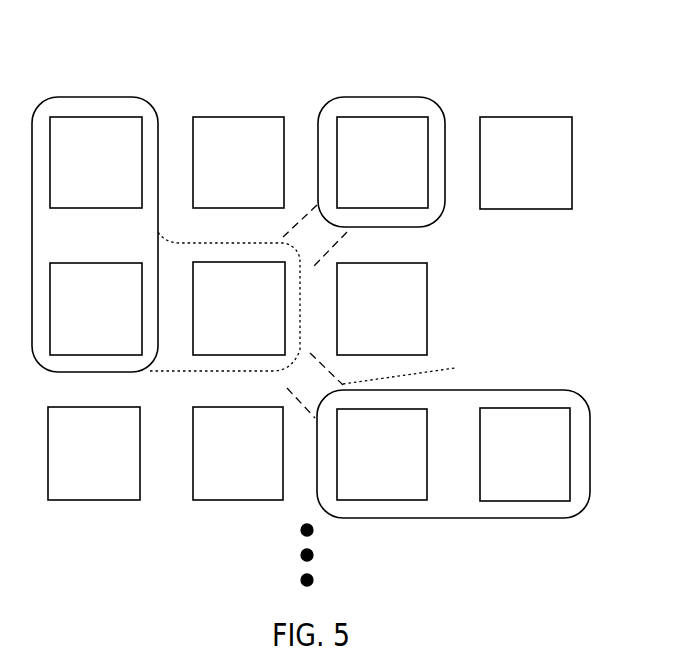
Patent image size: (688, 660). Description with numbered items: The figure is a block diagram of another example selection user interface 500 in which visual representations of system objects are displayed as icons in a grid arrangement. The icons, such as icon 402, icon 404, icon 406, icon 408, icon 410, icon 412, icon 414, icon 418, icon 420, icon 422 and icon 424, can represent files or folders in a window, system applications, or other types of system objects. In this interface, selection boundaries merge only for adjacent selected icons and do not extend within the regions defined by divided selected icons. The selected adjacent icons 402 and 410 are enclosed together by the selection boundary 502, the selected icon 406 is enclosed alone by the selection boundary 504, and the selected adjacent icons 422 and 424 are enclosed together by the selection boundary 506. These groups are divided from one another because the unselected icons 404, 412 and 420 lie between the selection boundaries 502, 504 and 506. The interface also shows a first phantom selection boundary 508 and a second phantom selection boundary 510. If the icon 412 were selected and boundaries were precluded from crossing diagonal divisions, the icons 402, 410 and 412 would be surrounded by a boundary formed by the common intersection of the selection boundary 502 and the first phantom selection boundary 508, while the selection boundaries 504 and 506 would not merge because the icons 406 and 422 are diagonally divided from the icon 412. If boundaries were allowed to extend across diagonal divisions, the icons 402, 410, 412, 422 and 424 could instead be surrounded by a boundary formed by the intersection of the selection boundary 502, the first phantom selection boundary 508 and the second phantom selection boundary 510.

The selection user interface 500 is at (465, 81).
The icon 402 is at (78, 174).
The icon 404 is at (220, 174).
The icon 406 is at (364, 174).
The icon 408 is at (508, 174).
The icon 410 is at (78, 320).
The icon 412 is at (221, 320).
The icon 414 is at (364, 320).
The icon 418 is at (76, 465).
The icon 420 is at (220, 465).
The icon 422 is at (364, 465).
The icon 424 is at (507, 465).
The selection boundary 502 is at (150, 106).
The selection boundary 504 is at (327, 106).
The selection boundary 506 is at (577, 403).
The first phantom selection boundary 508 is at (205, 371).
The second phantom selection boundary 510 is at (455, 368).